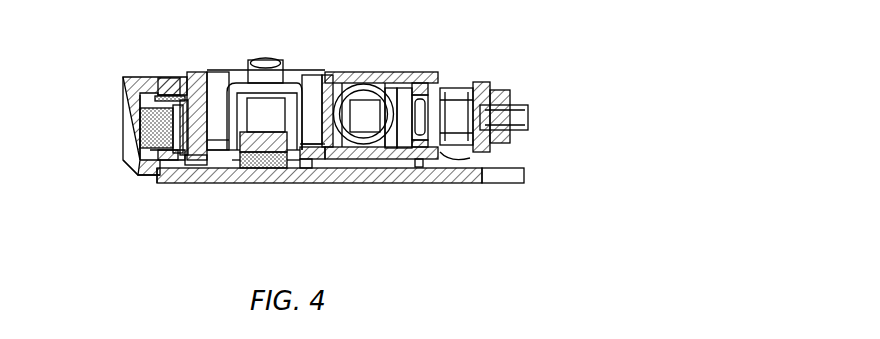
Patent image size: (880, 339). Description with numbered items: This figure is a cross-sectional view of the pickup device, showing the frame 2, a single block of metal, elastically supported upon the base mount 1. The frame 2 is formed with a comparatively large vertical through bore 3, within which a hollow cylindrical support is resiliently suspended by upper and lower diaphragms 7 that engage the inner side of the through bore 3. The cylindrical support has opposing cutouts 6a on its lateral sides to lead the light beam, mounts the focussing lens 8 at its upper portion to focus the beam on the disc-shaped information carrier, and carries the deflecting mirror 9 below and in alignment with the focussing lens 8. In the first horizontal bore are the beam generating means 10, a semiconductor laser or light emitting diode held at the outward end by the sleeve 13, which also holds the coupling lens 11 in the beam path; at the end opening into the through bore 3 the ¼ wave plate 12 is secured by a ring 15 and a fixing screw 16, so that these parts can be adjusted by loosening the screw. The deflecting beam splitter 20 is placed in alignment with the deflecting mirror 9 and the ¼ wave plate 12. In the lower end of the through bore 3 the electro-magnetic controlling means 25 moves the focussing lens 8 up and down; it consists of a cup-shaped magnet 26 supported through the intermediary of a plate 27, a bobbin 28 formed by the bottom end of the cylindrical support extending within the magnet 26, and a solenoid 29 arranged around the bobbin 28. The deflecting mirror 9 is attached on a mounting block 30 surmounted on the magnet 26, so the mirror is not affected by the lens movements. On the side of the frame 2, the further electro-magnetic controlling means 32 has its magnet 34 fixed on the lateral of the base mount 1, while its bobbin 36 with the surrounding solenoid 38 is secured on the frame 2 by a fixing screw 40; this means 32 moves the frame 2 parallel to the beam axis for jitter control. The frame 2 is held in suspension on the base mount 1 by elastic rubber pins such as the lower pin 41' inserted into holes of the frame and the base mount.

The base mount 1 is at (455, 172).
The frame 2 is at (195, 73).
The through bore 3 is at (218, 85).
The cutouts 6a is at (300, 152).
The diaphragms 7 is at (311, 75).
The focussing lens 8 is at (263, 70).
The deflecting mirror 9 is at (260, 122).
The beam generating means 10 is at (470, 98).
The coupling lens 11 is at (428, 100).
The ¼ wave plate 12 is at (352, 82).
The sleeve 13 is at (418, 108).
The ring 15 is at (352, 152).
The fixing screw 16 is at (333, 78).
The deflecting beam splitter 20 is at (380, 152).
The electro-magnetic controlling means 25 is at (258, 190).
The cup-shaped magnet 26 is at (292, 163).
The plate 27 is at (195, 162).
The bobbin 28 is at (303, 178).
The solenoid 29 is at (252, 155).
The mounting block 30 is at (270, 165).
The electro-magnetic controlling means 32 is at (118, 135).
The magnet 34 is at (135, 168).
The bobbin 36 is at (165, 106).
The solenoid 38 is at (160, 86).
The fixing screw 40 is at (156, 178).
The pin 41' is at (192, 194).